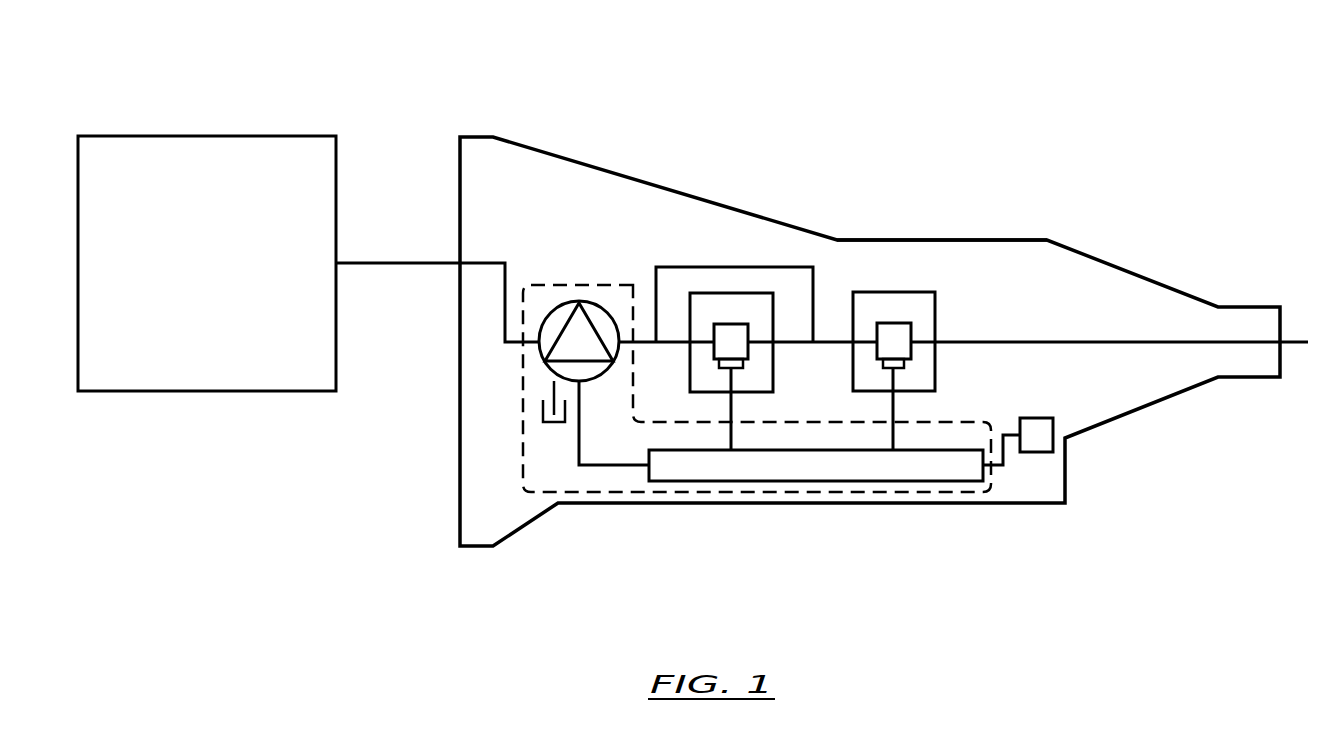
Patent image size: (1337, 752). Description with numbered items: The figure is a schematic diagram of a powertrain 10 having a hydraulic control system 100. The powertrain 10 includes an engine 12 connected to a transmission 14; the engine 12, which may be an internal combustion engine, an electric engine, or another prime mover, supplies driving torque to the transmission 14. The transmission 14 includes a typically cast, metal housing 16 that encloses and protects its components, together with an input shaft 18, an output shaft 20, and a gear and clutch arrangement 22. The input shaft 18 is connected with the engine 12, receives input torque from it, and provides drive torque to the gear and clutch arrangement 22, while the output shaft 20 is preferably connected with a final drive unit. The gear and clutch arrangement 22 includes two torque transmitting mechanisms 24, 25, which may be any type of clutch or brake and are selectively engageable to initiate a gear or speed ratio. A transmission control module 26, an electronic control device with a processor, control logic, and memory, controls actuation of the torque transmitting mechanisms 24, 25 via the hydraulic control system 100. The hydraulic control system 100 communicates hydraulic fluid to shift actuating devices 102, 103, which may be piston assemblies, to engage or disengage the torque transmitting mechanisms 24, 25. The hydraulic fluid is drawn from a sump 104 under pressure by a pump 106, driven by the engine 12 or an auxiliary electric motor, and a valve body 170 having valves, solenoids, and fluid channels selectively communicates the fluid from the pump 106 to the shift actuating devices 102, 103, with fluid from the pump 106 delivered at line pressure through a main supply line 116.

The powertrain 10 is at (931, 94).
The engine 12 is at (192, 281).
The transmission 14 is at (1033, 238).
The housing 16 is at (935, 240).
The input shaft 18 is at (385, 263).
The output shaft 20 is at (1042, 342).
The gear and clutch arrangement 22 is at (775, 238).
The torque transmitting mechanism 24 is at (895, 323).
The torque transmitting mechanism 25 is at (727, 324).
The transmission control module 26 is at (1047, 443).
The hydraulic control system 100 is at (620, 492).
The shift actuating device 102 is at (887, 368).
The shift actuating device 103 is at (728, 368).
The sump 104 is at (542, 411).
The pump 106 is at (579, 302).
The main supply line 116 is at (647, 335).
The valve body 170 is at (775, 482).